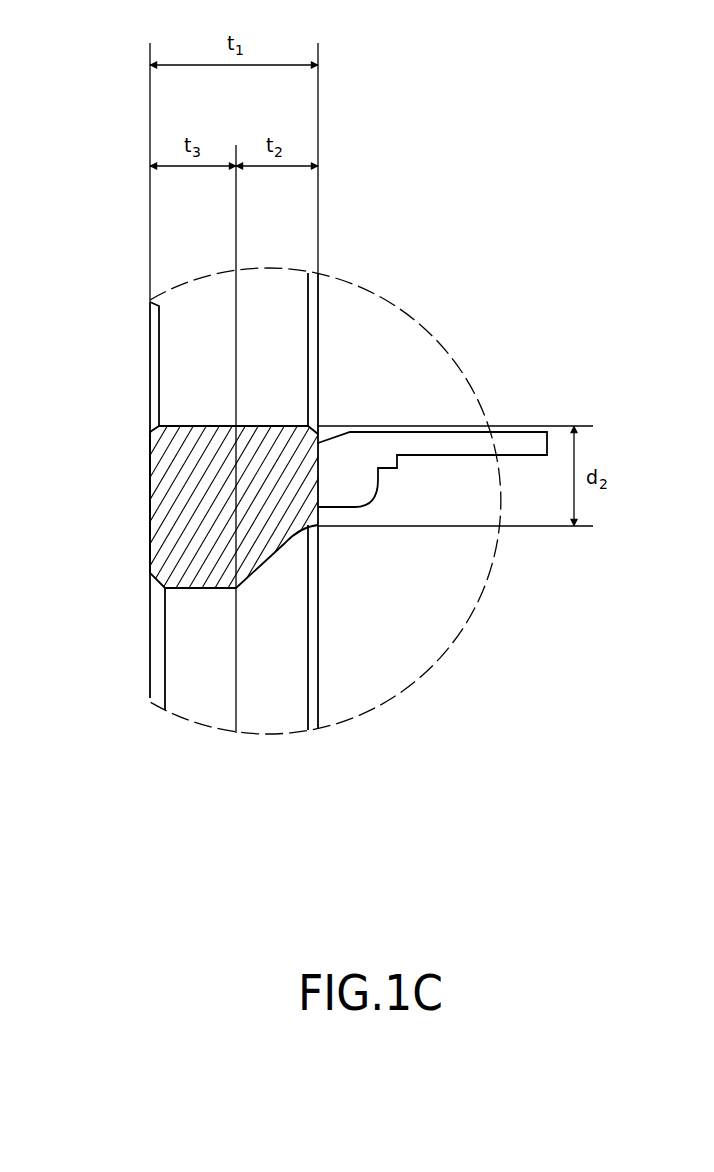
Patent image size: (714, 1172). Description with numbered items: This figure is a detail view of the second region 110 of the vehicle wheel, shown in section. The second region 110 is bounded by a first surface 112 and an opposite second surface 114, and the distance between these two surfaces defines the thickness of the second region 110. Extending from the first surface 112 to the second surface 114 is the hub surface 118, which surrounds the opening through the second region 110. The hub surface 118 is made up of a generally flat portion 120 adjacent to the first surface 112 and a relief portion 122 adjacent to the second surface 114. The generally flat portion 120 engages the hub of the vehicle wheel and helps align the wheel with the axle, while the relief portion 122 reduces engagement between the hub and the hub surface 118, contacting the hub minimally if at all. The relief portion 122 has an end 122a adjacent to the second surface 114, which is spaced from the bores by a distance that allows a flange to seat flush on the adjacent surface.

The second region 110 is at (130, 366).
The first surface 112 is at (148, 495).
The second surface 114 is at (320, 328).
The hub surface 118 is at (90, 660).
The generally flat portion 120 is at (225, 650).
The relief portion 122 is at (277, 680).
The end 122a is at (318, 526).